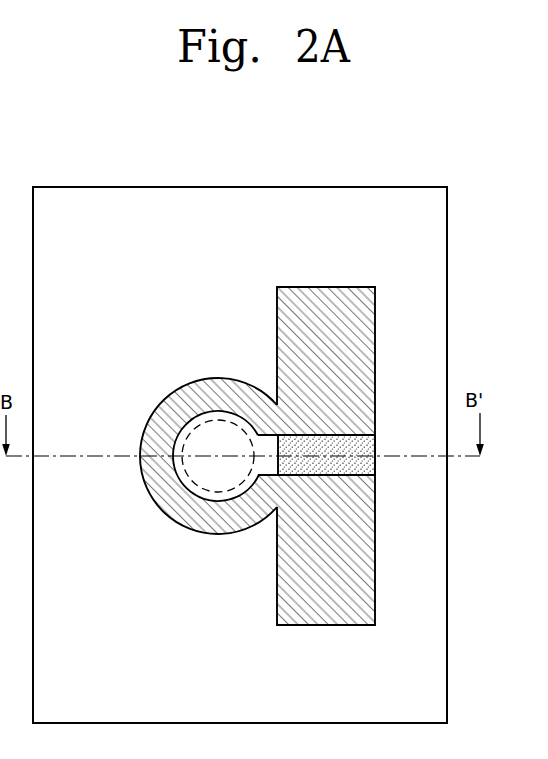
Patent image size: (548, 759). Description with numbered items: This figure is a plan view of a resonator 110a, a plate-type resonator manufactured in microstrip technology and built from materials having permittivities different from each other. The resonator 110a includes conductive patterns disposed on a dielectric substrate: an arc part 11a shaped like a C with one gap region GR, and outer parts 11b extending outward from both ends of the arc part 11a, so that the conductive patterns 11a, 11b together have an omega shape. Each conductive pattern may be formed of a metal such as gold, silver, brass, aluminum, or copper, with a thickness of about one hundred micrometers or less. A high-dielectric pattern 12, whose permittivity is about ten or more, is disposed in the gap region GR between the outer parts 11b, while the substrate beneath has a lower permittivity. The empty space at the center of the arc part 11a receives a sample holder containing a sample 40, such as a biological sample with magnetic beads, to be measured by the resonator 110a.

The resonator 110a is at (452, 132).
The arc part 11a is at (216, 379).
The outer parts 11b is at (331, 287).
The high-dielectric pattern 12 is at (366, 472).
The gap region GR is at (350, 435).
The sample 40 is at (217, 492).